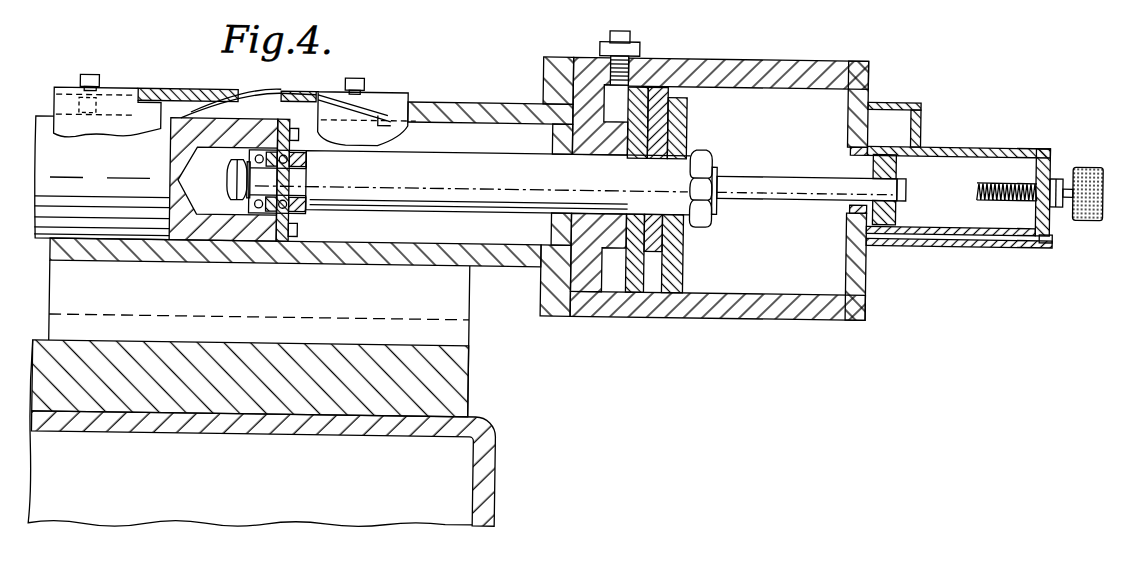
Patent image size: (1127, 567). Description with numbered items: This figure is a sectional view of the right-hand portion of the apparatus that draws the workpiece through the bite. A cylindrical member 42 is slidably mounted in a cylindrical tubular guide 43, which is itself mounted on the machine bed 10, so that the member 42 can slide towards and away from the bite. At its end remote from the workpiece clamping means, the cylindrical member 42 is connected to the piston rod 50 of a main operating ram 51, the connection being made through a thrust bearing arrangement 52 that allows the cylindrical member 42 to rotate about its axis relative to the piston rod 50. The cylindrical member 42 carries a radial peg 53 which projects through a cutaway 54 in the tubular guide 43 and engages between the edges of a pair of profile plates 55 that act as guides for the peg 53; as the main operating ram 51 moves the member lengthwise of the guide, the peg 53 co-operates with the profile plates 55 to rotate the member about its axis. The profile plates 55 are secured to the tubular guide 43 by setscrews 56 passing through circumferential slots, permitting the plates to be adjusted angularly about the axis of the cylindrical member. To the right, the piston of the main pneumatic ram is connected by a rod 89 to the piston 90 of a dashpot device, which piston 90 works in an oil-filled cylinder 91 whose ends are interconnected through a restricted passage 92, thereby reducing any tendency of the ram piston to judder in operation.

The machine bed 10 is at (497, 403).
The cylindrical member 42 is at (39, 125).
The cylindrical tubular guide 43 is at (450, 104).
The piston rod 50 is at (493, 216).
The main operating ram 51 is at (603, 308).
The thrust bearing arrangement 52 is at (271, 219).
The radial peg 53 is at (177, 118).
The cutaway 54 is at (277, 116).
The profile plates 55 is at (146, 94).
The setscrews 56 is at (91, 81).
The rod 89 is at (751, 199).
The piston 90 is at (898, 209).
The oil-filled cylinder 91 is at (975, 143).
The restricted passage 92 is at (969, 237).